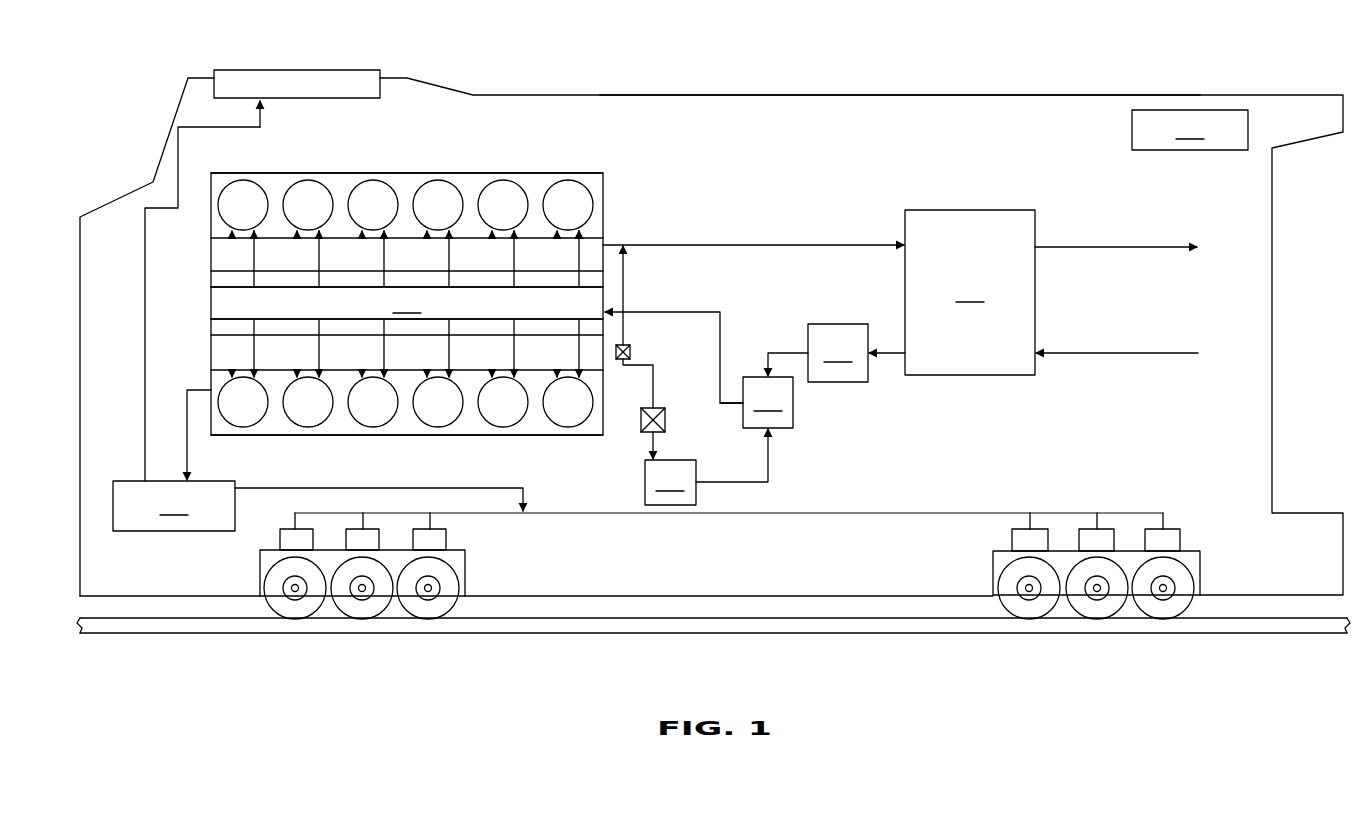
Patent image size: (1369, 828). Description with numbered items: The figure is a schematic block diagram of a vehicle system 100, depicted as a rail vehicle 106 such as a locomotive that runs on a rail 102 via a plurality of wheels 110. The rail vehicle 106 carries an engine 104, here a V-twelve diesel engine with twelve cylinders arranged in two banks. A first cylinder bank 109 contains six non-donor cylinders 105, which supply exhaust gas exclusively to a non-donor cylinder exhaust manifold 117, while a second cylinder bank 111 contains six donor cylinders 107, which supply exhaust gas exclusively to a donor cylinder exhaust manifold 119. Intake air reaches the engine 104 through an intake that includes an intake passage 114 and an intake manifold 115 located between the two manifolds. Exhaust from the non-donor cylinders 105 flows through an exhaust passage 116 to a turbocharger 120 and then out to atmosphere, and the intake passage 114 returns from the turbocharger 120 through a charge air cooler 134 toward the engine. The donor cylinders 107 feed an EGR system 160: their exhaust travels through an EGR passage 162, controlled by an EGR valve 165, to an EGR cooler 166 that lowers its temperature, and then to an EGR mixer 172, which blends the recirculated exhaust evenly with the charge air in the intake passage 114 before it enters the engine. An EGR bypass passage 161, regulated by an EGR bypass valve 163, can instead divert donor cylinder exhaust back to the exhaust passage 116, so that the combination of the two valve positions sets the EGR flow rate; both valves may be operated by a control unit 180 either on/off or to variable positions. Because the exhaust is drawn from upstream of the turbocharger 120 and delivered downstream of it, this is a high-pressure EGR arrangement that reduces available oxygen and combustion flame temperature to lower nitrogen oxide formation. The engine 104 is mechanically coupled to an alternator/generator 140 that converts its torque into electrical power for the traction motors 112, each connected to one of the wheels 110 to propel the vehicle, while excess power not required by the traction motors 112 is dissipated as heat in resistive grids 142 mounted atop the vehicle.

The vehicle system 100 is at (1177, 71).
The rail 102 is at (1264, 635).
The engine 104 is at (501, 160).
The non-donor cylinders 105 is at (376, 181).
The rail vehicle 106 is at (1030, 95).
The donor cylinders 107 is at (374, 428).
The first cylinder bank 109 is at (345, 172).
The wheels 110 is at (450, 578).
The second cylinder bank 111 is at (530, 436).
The traction motors 112 is at (447, 541).
The intake passage 114 is at (1150, 353).
The intake manifold 115 is at (407, 303).
The exhaust passage 116 is at (761, 245).
The non-donor cylinder exhaust manifold 117 is at (210, 258).
The donor cylinder exhaust manifold 119 is at (210, 355).
The turbocharger 120 is at (970, 292).
The charge air cooler 134 is at (836, 353).
The alternator/generator 140 is at (318, 460).
The resistive grids 142 is at (365, 70).
The EGR system 160 is at (791, 467).
The EGR bypass passage 161 is at (622, 270).
The EGR passage 162 is at (653, 392).
The EGR bypass valve 163 is at (625, 346).
The EGR valve 165 is at (656, 436).
The EGR cooler 166 is at (706, 467).
The EGR mixer 172 is at (768, 402).
The control unit 180 is at (1190, 130).